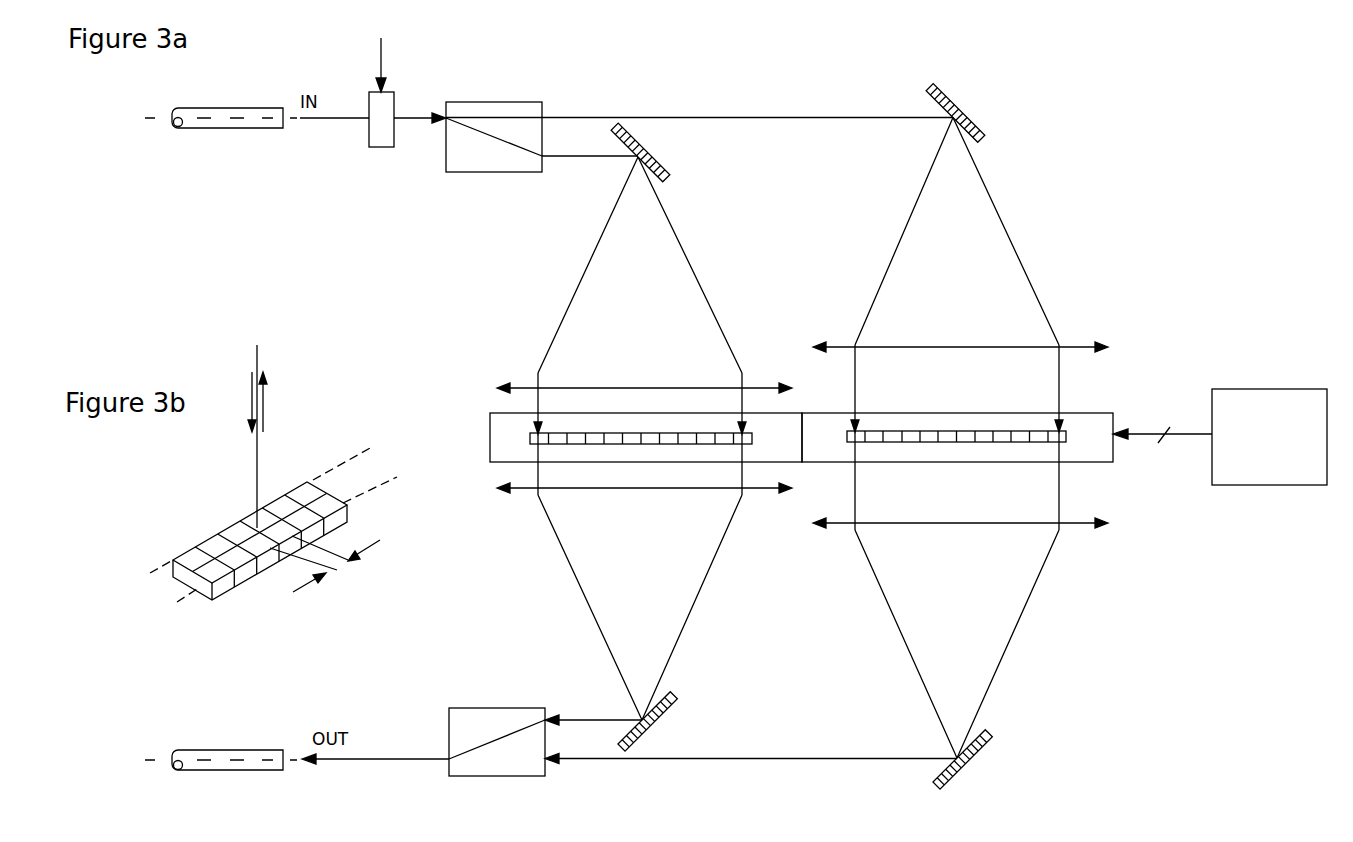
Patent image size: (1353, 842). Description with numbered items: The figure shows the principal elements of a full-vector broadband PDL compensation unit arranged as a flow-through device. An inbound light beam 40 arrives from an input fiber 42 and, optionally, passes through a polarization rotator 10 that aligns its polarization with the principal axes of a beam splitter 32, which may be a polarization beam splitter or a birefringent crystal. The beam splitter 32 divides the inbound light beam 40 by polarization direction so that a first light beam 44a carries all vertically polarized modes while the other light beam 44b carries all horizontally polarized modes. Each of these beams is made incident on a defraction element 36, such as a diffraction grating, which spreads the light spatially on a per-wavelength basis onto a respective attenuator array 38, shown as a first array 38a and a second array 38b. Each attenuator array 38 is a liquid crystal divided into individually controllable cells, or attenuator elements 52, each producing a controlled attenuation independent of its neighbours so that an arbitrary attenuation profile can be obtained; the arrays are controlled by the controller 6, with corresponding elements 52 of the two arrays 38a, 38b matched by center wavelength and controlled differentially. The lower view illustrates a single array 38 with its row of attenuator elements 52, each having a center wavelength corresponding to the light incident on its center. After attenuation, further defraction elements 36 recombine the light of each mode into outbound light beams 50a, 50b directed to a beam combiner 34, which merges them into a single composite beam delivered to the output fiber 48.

In FIG. 3A, the input fiber 42 is at (224, 107).
In FIG. 3A, the inbound light beam 40 is at (404, 116).
In FIG. 3A, the polarization rotator 10 is at (378, 149).
In FIG. 3A, the beam splitter 32 is at (520, 102).
In FIG. 3A, the first light beam 44a is at (590, 160).
In FIG. 3A, the other light beam 44b is at (693, 117).
In FIG. 3A, the defraction element 36 is at (662, 162).
In FIG. 3A, the attenuator array 38a is at (612, 426).
In FIG. 3A, the attenuator array 38b is at (980, 436).
In FIG. 3B, the attenuator array 38 is at (238, 473).
In FIG. 3B, the attenuator element 52 is at (258, 541).
In FIG. 3A, the controller 6 is at (1245, 391).
In FIG. 3A, the outbound light beam 50a is at (600, 718).
In FIG. 3A, the outbound light beam 50b is at (800, 757).
In FIG. 3A, the beam combiner 34 is at (497, 707).
In FIG. 3A, the output fiber 48 is at (226, 750).